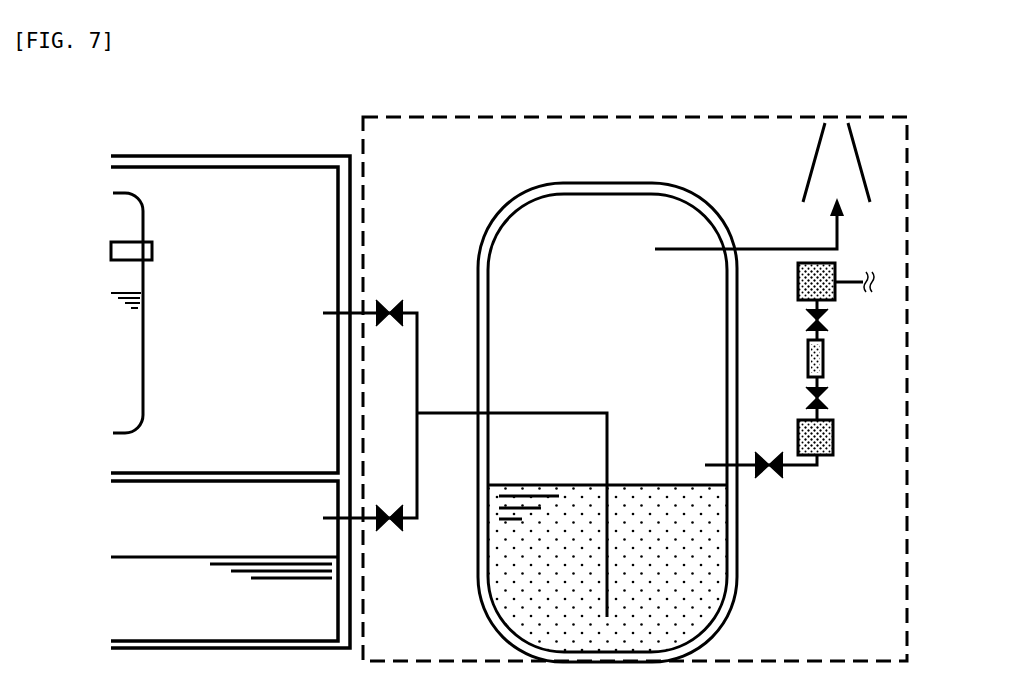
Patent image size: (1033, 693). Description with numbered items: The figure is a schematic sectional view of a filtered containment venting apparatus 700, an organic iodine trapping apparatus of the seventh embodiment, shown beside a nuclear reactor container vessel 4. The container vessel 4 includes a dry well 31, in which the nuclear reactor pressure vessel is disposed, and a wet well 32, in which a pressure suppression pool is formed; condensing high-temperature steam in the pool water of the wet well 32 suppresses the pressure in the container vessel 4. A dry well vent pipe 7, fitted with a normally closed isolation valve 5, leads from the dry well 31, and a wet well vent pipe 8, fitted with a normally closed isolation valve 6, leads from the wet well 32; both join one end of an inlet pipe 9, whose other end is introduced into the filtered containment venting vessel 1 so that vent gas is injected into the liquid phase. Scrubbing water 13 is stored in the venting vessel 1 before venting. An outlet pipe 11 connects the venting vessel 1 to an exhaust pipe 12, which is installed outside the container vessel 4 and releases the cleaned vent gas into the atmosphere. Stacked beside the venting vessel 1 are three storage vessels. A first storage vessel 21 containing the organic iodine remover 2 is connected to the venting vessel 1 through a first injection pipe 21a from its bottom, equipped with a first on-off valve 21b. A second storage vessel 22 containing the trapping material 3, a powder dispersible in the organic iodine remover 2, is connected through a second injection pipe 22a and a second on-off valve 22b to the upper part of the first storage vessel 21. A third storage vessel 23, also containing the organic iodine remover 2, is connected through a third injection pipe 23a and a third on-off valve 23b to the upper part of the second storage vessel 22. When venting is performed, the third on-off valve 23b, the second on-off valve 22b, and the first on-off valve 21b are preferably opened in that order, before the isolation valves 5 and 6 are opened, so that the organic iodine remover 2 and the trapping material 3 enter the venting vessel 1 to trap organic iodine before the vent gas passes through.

The filtered containment venting apparatus 700 is at (650, 117).
The filtered containment venting vessel 1 is at (603, 193).
The organic iodine remover 2 is at (798, 285).
The trapping material 3 is at (808, 360).
The nuclear reactor container vessel 4 is at (293, 157).
The isolation valve 5 is at (386, 300).
The isolation valve 6 is at (388, 503).
The dry well vent pipe 7 is at (417, 360).
The wet well vent pipe 8 is at (417, 480).
The inlet pipe 9 is at (553, 412).
The outlet pipe 11 is at (745, 249).
The exhaust pipe 12 is at (810, 176).
The scrubbing water 13 is at (713, 555).
The first storage vessel 21 is at (834, 437).
The first injection pipe 21a is at (812, 468).
The first on-off valve 21b is at (770, 479).
The second storage vessel 22 is at (823, 355).
The second injection pipe 22a is at (829, 392).
The second on-off valve 22b is at (806, 405).
The third storage vessel 23 is at (838, 272).
The third injection pipe 23a is at (829, 313).
The third on-off valve 23b is at (806, 323).
The dry well 31 is at (317, 207).
The wet well 32 is at (316, 538).